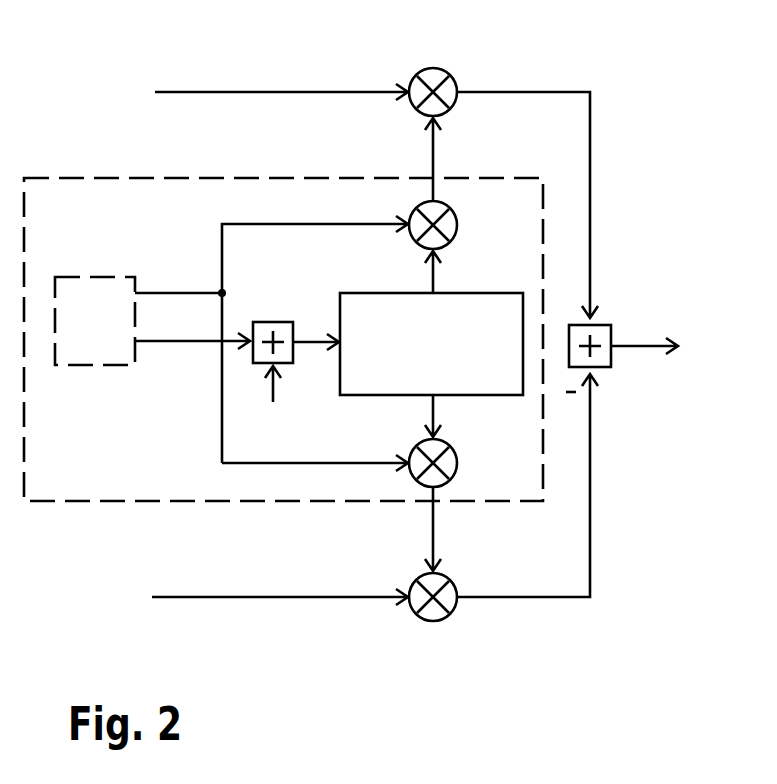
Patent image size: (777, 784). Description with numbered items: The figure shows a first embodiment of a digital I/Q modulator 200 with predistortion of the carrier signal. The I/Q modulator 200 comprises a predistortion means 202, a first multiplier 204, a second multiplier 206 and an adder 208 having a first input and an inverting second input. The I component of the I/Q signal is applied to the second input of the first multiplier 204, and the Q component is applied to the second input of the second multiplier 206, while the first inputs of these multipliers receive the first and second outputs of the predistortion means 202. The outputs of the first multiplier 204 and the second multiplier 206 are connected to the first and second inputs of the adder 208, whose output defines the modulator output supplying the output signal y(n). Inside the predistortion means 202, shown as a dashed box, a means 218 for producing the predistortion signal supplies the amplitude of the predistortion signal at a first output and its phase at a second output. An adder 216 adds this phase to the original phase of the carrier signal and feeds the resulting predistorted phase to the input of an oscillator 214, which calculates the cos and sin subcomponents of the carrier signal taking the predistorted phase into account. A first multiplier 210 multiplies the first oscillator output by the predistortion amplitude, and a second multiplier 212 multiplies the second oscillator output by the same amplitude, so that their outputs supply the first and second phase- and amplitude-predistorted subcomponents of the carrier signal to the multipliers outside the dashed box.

The digital I/Q modulator 200 is at (697, 78).
The predistortion means 202 is at (543, 218).
The first multiplier 204 is at (452, 78).
The second multiplier 206 is at (426, 619).
The adder 208 is at (611, 330).
The first multiplier of the predistortion means 210 is at (444, 206).
The second multiplier of the predistortion means 212 is at (497, 452).
The oscillator 214 is at (523, 303).
The adder of the predistortion means 216 is at (267, 322).
The means for producing the predistortion signal 218 is at (88, 277).